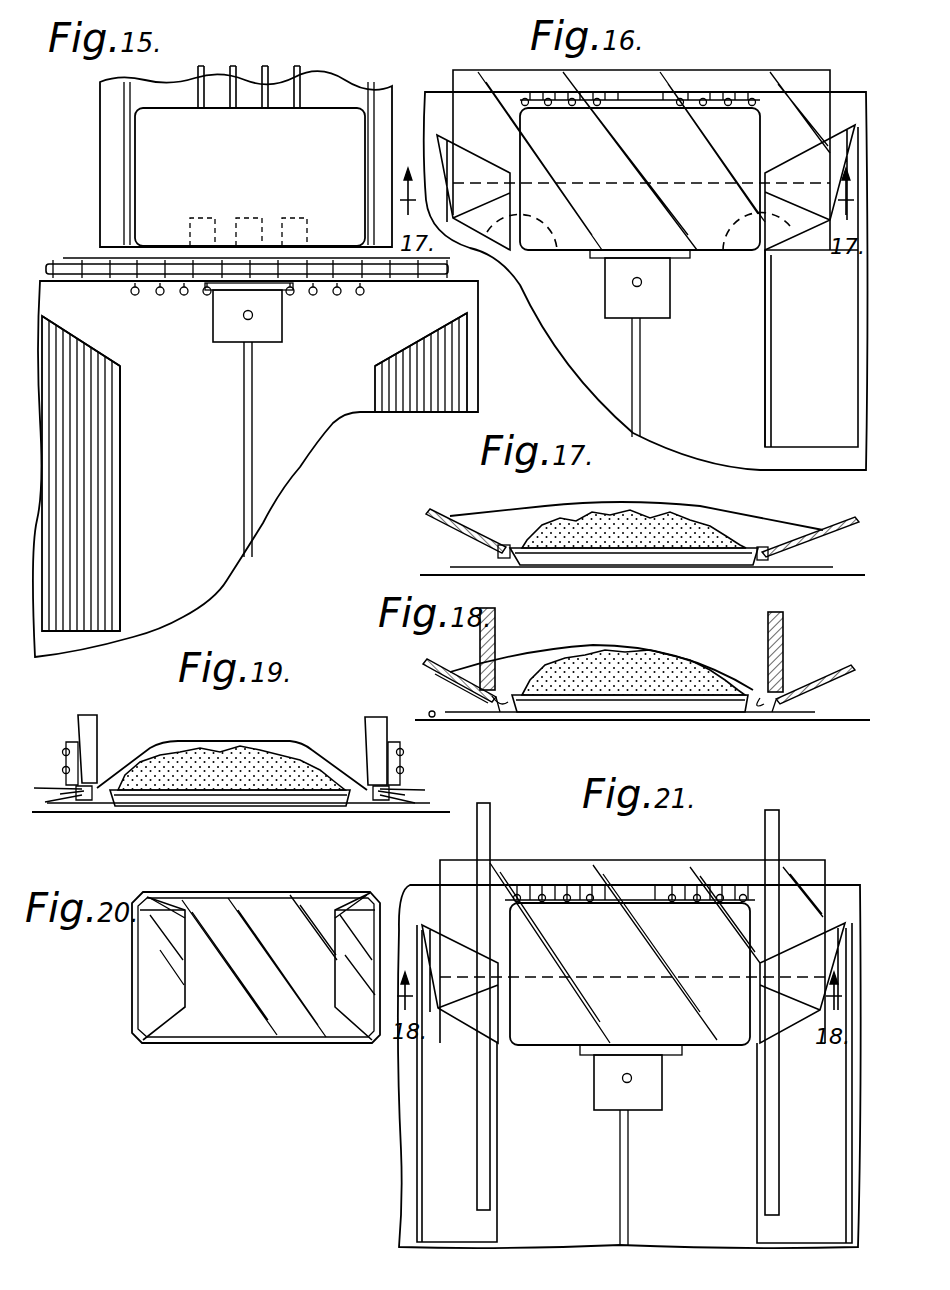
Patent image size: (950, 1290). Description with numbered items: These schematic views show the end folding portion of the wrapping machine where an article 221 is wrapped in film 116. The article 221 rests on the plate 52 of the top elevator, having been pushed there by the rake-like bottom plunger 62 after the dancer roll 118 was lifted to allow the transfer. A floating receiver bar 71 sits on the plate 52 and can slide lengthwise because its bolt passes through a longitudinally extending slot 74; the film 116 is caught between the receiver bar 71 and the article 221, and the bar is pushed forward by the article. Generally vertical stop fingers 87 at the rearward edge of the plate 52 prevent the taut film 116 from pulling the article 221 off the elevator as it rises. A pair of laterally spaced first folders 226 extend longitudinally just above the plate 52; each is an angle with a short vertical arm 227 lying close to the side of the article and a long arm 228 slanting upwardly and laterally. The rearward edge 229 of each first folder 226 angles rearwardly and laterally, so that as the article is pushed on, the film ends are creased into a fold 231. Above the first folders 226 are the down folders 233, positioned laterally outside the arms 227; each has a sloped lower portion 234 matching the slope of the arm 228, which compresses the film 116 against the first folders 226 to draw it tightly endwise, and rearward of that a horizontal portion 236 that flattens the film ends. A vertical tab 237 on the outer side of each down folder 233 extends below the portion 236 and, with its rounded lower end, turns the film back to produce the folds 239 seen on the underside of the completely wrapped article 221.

In FIG. 15, the plate 52 is at (330, 367).
In FIG. 16, the plate 52 is at (720, 363).
In FIG. 17, the plate 52 is at (450, 568).
In FIG. 18, the plate 52 is at (434, 717).
In FIG. 19, the plate 52 is at (447, 812).
In FIG. 21, the plate 52 is at (629, 1066).
In FIG. 15, the bottom plunger 62 is at (266, 80).
In FIG. 15, the floating receiver bar 71 is at (227, 346).
In FIG. 16, the floating receiver bar 71 is at (621, 320).
In FIG. 21, the floating receiver bar 71 is at (631, 1145).
In FIG. 15, the longitudinally extending slot 74 is at (252, 467).
In FIG. 16, the stop fingers 87 is at (729, 98).
In FIG. 15, the film 116 is at (67, 258).
In FIG. 16, the film 116 is at (775, 72).
In FIG. 21, the film 116 is at (632, 951).
In FIG. 15, the dancer roll 118 is at (73, 276).
In FIG. 15, the article 221 is at (300, 181).
In FIG. 16, the article 221 is at (710, 158).
In FIG. 17, the article 221 is at (645, 513).
In FIG. 18, the article 221 is at (655, 668).
In FIG. 19, the article 221 is at (267, 764).
In FIG. 20, the article 221 is at (278, 1018).
In FIG. 21, the article 221 is at (565, 1024).
In FIG. 15, the first folders 226 is at (126, 500).
In FIG. 16, the first folders 226 is at (486, 262).
In FIG. 17, the first folders 226 is at (437, 528).
In FIG. 18, the first folders 226 is at (424, 665).
In FIG. 21, the first folders 226 is at (417, 1173).
In FIG. 15, the short vertically extending arm 227 is at (119, 438).
In FIG. 16, the short vertically extending arm 227 is at (766, 426).
In FIG. 18, the short vertically extending arm 227 is at (504, 704).
In FIG. 15, the long arm 228 is at (85, 575).
In FIG. 18, the long arm 228 is at (483, 689).
In FIG. 15, the rearward edge 229 is at (80, 337).
In FIG. 16, the rearward edge 229 is at (444, 138).
In FIG. 21, the rearward edge 229 is at (633, 983).
In FIG. 16, the crease or fold 231 is at (638, 251).
In FIG. 20, the crease or fold 231 is at (160, 1026).
In FIG. 18, the down folders 233 is at (498, 628).
In FIG. 19, the down folders 233 is at (110, 701).
In FIG. 21, the down folders 233 is at (494, 830).
In FIG. 18, the sloped portion 234 is at (490, 708).
In FIG. 19, the sloped portion 234 is at (84, 796).
In FIG. 19, the horizontal bottom side portion 236 is at (92, 800).
In FIG. 19, the vertical tab 237 is at (64, 756).
In FIG. 20, the folds 239 is at (170, 911).